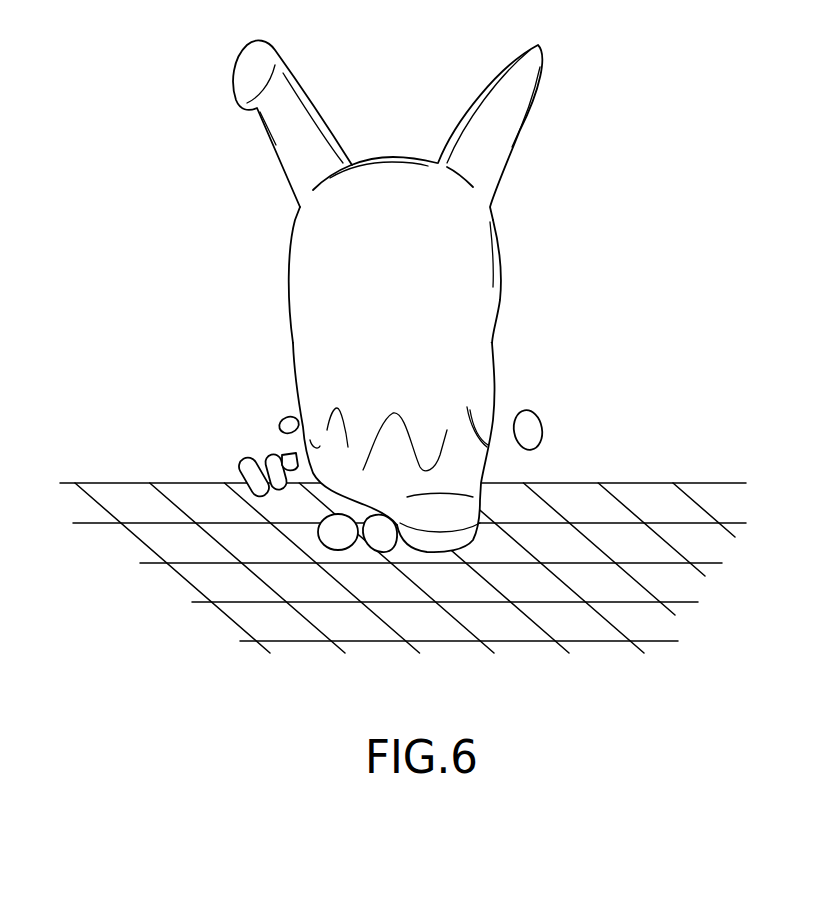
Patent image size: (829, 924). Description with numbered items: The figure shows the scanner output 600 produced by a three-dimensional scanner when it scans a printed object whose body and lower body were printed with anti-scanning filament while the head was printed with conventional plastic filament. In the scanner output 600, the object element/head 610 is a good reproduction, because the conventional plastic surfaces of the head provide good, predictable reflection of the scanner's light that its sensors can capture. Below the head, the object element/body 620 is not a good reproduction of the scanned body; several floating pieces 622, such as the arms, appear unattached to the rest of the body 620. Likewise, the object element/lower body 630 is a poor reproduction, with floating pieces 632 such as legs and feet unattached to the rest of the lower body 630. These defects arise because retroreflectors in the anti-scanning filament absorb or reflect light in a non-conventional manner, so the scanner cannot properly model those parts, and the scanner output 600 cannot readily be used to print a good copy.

The scanner output 600 is at (430, 286).
The object element/head 610 is at (536, 259).
The object element/body 620 is at (534, 377).
The floating pieces 622 is at (242, 462).
The object element/lower body 630 is at (510, 531).
The floating pieces 632 is at (383, 538).